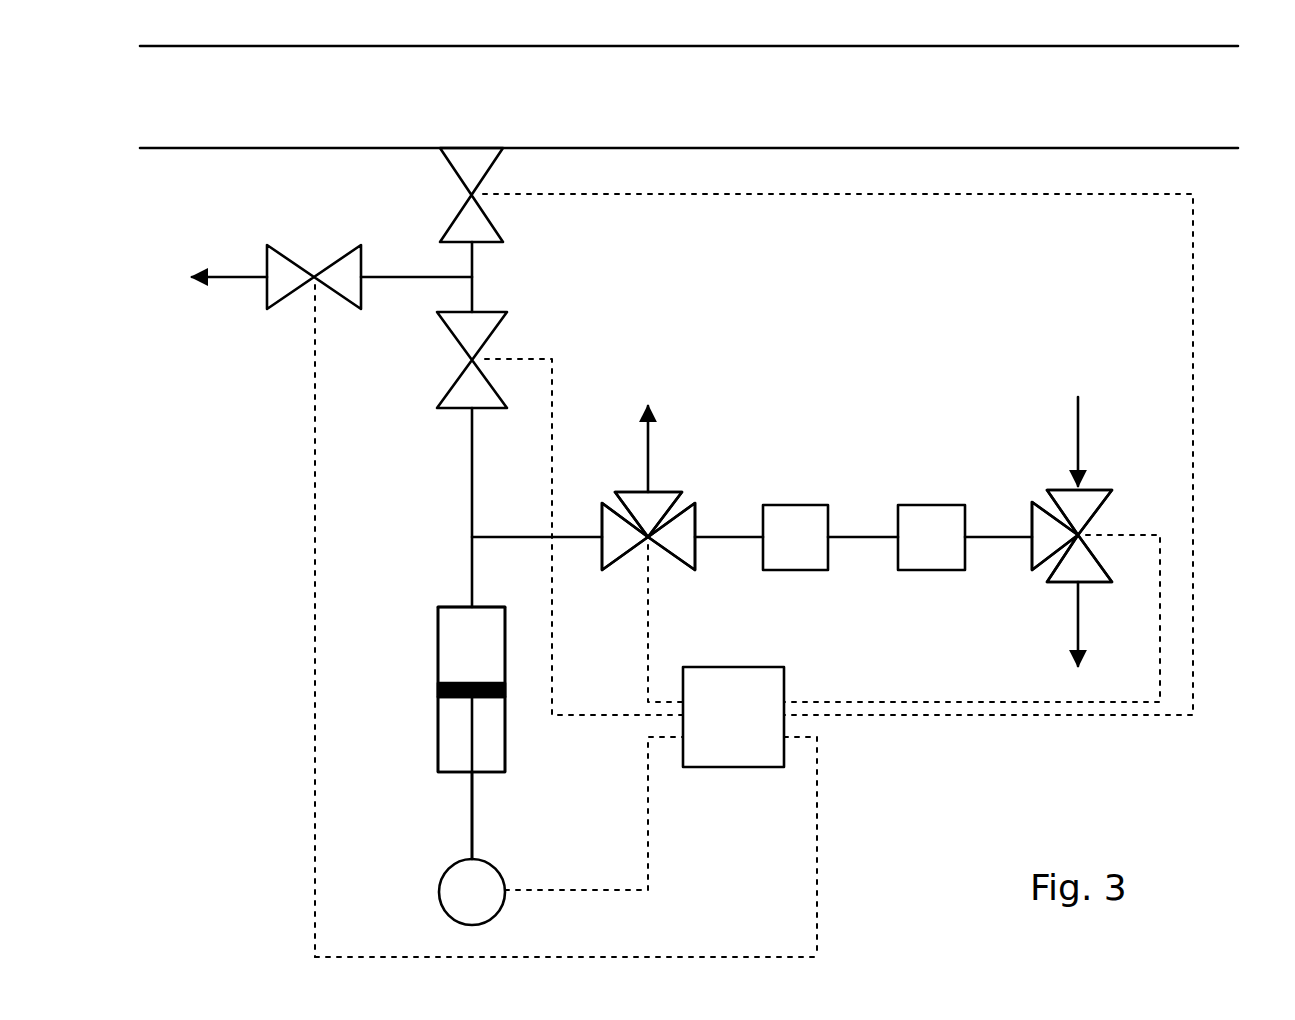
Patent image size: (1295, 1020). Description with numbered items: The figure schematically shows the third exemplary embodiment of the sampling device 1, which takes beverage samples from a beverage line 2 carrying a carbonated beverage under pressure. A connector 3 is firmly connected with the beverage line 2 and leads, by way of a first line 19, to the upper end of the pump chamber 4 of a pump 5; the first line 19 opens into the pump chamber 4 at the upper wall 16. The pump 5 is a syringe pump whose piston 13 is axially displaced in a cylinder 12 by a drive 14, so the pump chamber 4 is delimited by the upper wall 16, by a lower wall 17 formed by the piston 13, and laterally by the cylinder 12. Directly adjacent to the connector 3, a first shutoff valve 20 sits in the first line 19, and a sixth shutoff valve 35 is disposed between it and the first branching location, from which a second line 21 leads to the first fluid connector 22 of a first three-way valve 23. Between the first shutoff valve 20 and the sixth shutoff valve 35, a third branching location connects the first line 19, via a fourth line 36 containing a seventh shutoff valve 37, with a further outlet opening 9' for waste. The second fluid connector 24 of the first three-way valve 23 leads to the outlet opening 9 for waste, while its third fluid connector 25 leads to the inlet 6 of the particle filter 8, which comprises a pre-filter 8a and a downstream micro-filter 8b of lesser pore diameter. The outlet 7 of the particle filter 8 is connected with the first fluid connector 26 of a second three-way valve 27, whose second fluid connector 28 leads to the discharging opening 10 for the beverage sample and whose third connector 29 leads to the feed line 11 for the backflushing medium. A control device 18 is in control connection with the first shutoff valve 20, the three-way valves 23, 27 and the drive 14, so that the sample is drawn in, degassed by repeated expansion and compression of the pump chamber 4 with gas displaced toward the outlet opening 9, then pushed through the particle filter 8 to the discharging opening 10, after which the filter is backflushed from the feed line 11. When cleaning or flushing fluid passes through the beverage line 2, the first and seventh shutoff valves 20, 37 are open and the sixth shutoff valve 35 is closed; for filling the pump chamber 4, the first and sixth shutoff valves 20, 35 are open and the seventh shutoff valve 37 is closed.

The sampling device 1 is at (1182, 811).
The beverage line 2 is at (685, 110).
The connector 3 is at (466, 147).
The pump chamber 4 is at (483, 665).
The pump 5 is at (384, 803).
The inlet 6 is at (762, 558).
The outlet 7 is at (970, 552).
The particle filter 8 is at (965, 476).
The pre-filter 8a is at (814, 553).
The micro-filter 8b is at (950, 553).
The outlet opening 9 is at (669, 424).
The further outlet opening 9' is at (219, 320).
The discharging opening 10 is at (1074, 668).
The feed line 11 is at (1080, 438).
The cylinder 12 is at (508, 745).
The piston 13 is at (448, 704).
The drive 14 is at (438, 890).
The upper wall 16 is at (450, 606).
The lower wall 17 is at (492, 682).
The control device 18 is at (752, 732).
The first line 19 is at (480, 292).
The first shutoff valve 20 is at (512, 213).
The second line 21 is at (512, 536).
The first fluid connector 22 is at (606, 560).
The first three-way valve 23 is at (684, 468).
The second fluid connector 24 is at (644, 491).
The third fluid connector 25 is at (700, 530).
The first fluid connector 26 is at (1034, 520).
The second three-way valve 27 is at (1024, 608).
The second fluid connector 28 is at (1086, 588).
The third connector 29 is at (1086, 490).
The sixth shutoff valve 35 is at (432, 359).
The fourth line 36 is at (404, 275).
The seventh shutoff valve 37 is at (303, 238).